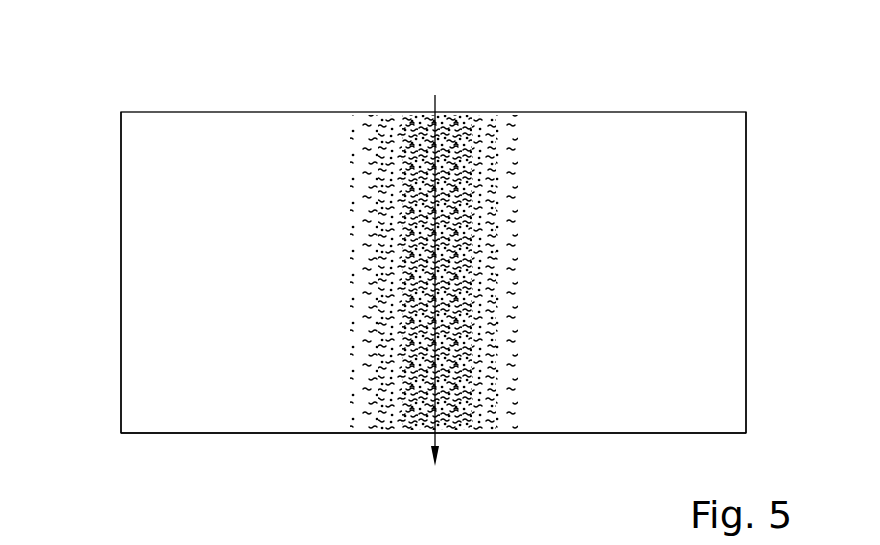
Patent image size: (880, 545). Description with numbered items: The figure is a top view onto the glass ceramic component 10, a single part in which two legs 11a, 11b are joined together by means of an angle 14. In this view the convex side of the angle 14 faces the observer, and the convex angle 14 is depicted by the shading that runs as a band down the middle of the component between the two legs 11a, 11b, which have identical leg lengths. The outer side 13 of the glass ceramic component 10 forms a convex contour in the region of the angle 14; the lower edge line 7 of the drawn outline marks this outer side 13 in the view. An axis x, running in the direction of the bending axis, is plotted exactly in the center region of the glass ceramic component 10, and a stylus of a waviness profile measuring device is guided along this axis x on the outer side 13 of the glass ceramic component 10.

The glass ceramic component 10 is at (656, 90).
The leg 11a is at (141, 160).
The leg 11b is at (722, 294).
The outer side 13 is at (252, 418).
The angle 14 is at (387, 450).
The edge line 7 is at (433, 416).